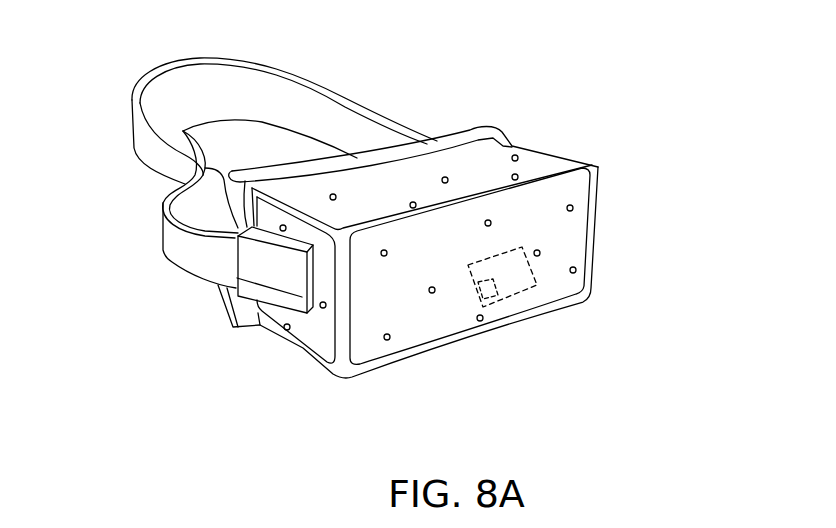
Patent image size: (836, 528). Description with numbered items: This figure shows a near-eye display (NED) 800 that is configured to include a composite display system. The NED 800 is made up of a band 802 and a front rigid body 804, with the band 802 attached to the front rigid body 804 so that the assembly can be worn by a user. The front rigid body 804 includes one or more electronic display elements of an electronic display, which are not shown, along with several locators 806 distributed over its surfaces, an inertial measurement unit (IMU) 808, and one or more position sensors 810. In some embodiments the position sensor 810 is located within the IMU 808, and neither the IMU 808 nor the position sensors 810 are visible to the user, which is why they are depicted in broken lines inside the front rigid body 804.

The near-eye display 800 is at (93, 49).
The band 802 is at (365, 103).
The front rigid body 804 is at (633, 127).
The locators 806 is at (577, 268).
The inertial measurement unit 808 is at (540, 288).
The position sensors 810 is at (500, 303).